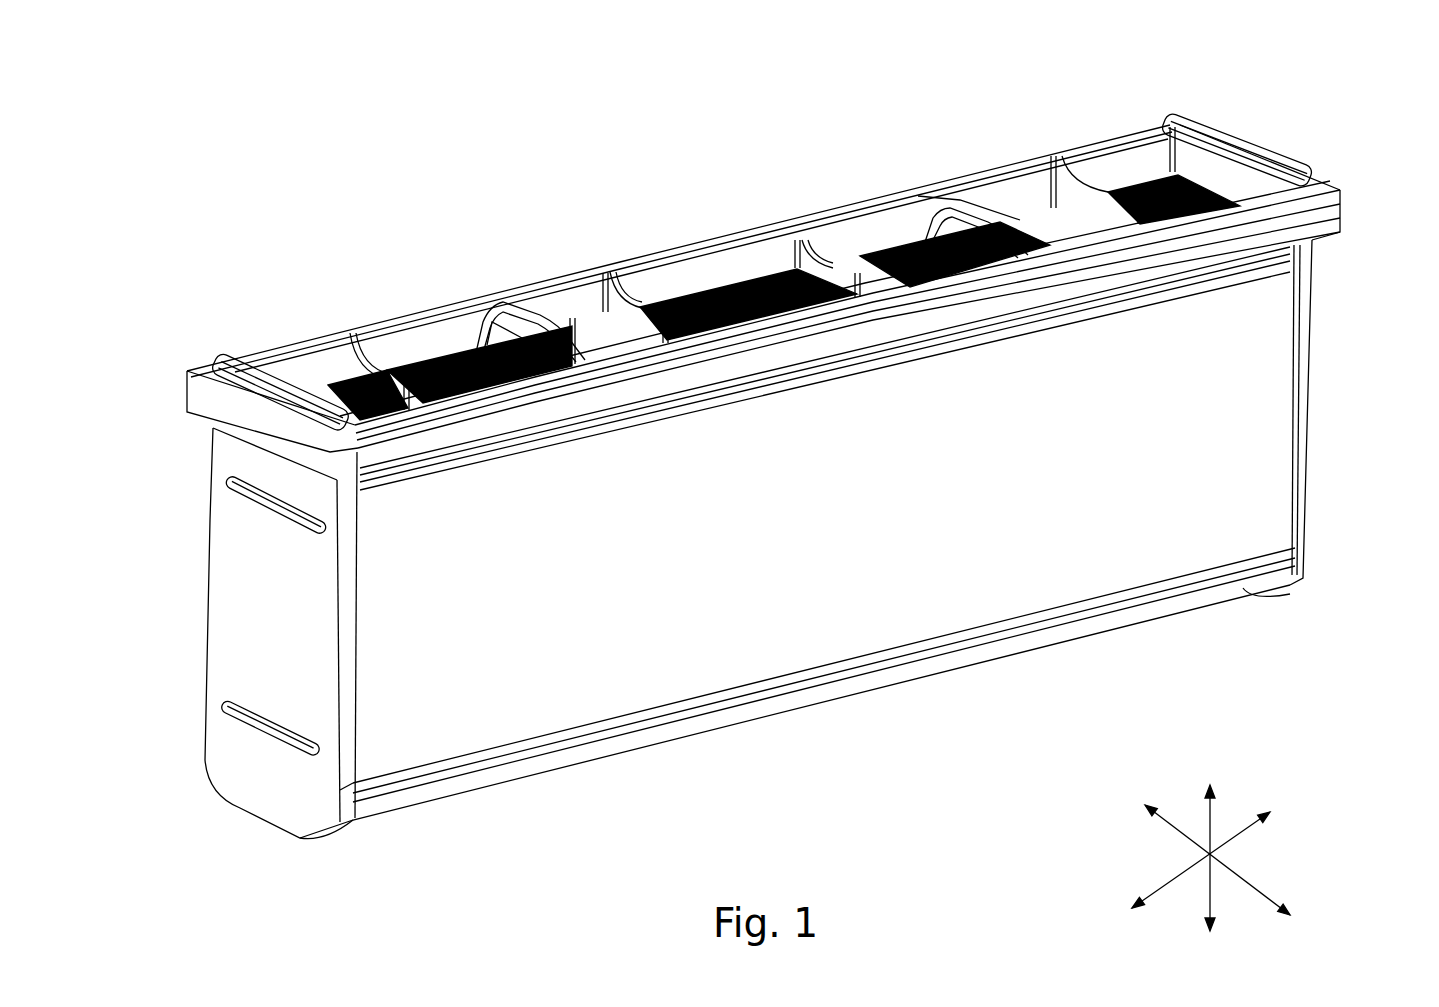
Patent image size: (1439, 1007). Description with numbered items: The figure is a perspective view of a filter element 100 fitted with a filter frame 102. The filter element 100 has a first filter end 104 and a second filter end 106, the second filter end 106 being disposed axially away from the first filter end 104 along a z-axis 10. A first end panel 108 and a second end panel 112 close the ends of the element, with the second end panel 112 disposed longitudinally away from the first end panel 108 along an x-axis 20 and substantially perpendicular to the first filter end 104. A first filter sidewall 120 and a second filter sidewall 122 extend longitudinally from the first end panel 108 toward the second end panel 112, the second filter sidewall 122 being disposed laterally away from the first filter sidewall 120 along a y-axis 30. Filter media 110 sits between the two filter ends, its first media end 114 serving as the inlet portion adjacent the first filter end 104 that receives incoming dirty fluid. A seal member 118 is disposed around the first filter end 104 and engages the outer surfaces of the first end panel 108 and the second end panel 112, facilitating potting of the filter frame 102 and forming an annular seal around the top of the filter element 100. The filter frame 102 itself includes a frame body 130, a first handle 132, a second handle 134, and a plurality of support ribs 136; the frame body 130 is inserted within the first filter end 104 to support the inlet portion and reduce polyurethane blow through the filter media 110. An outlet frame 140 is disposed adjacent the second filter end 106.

The filter element 100 is at (242, 155).
The filter frame 102 is at (1102, 158).
The first filter end 104 is at (693, 240).
The second filter end 106 is at (452, 804).
The first end panel 108 is at (238, 625).
The filter media 110 is at (418, 358).
The second end panel 112 is at (1307, 414).
The first media end 114 is at (906, 258).
The seal member 118 is at (1341, 204).
The first filter sidewall 120 is at (1000, 590).
The second filter sidewall 122 is at (263, 352).
The frame body 130 is at (1228, 158).
The first handle 132 is at (509, 280).
The second handle 134 is at (982, 182).
The support ribs 136 is at (370, 347).
The outlet frame 140 is at (777, 704).
The z-axis 10 is at (1211, 849).
The x-axis 20 is at (1190, 872).
The y-axis 30 is at (1231, 871).